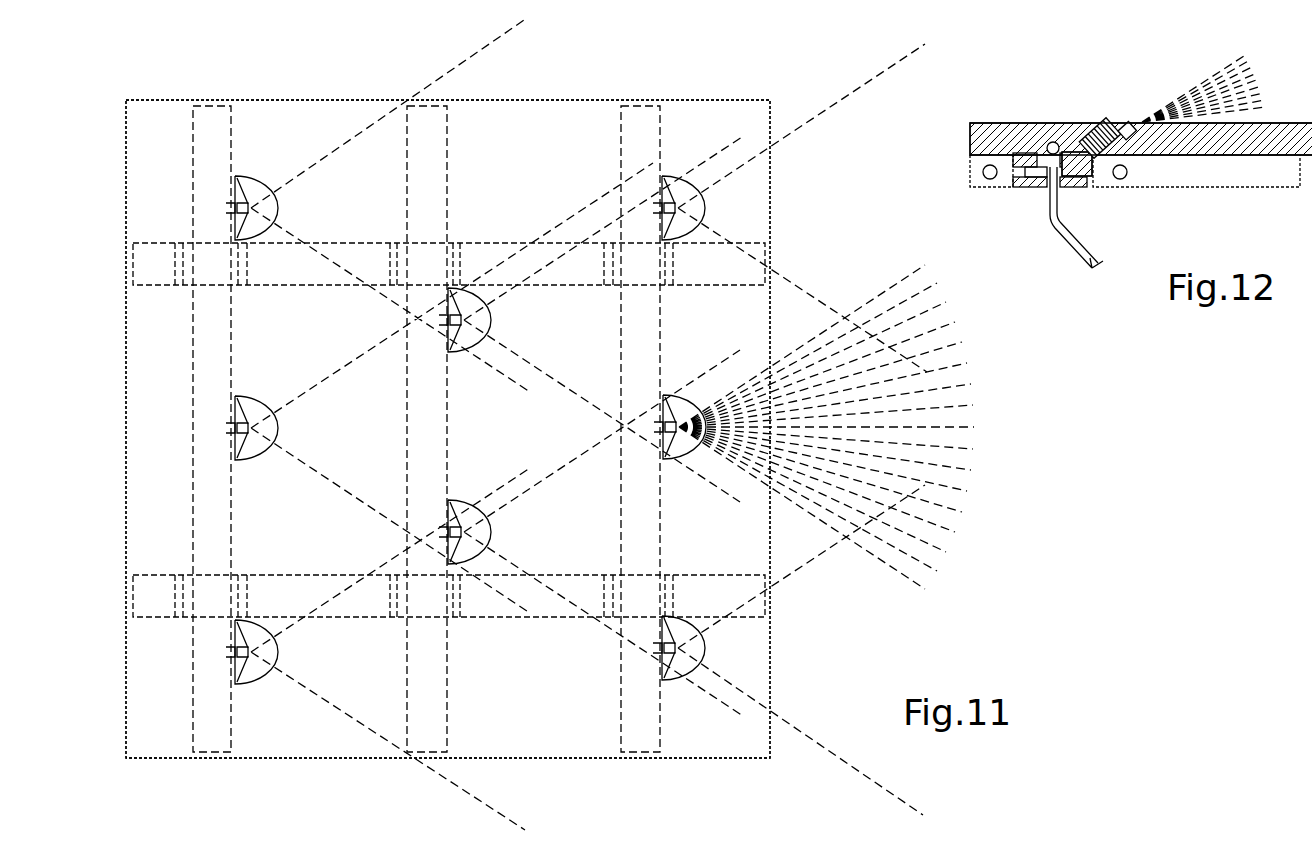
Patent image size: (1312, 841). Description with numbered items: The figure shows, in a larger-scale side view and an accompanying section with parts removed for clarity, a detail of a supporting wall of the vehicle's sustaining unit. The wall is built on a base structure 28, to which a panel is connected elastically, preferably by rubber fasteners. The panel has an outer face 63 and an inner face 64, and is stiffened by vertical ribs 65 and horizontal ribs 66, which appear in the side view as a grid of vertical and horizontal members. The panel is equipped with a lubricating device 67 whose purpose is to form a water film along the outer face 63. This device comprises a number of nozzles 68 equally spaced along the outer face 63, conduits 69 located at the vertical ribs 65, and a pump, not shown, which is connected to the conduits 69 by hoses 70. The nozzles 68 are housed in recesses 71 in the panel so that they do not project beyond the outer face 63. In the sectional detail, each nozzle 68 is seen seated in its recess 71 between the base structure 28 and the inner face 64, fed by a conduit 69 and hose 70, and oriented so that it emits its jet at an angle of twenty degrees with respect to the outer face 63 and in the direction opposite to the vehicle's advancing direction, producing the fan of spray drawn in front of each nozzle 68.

In FIG. 11, the base structure 28 is at (735, 120).
In FIG. 12, the base structure 28 is at (980, 145).
In FIG. 11, the outer face 63 is at (533, 138).
In FIG. 12, the outer face 63 is at (1080, 120).
In FIG. 12, the inner face 64 is at (1218, 163).
In FIG. 11, the vertical ribs 65 is at (210, 343).
In FIG. 12, the vertical ribs 65 is at (1032, 190).
In FIG. 11, the horizontal ribs 66 is at (347, 257).
In FIG. 12, the horizontal ribs 66 is at (1262, 172).
In FIG. 11, the lubricating device 67 is at (320, 128).
In FIG. 12, the lubricating device 67 is at (1167, 83).
In FIG. 11, the nozzles 68 is at (247, 200).
In FIG. 12, the nozzles 68 is at (1108, 130).
In FIG. 12, the conduits 69 is at (1075, 177).
In FIG. 12, the hoses 70 is at (1060, 233).
In FIG. 11, the recesses 71 is at (262, 208).
In FIG. 12, the recesses 71 is at (1133, 133).